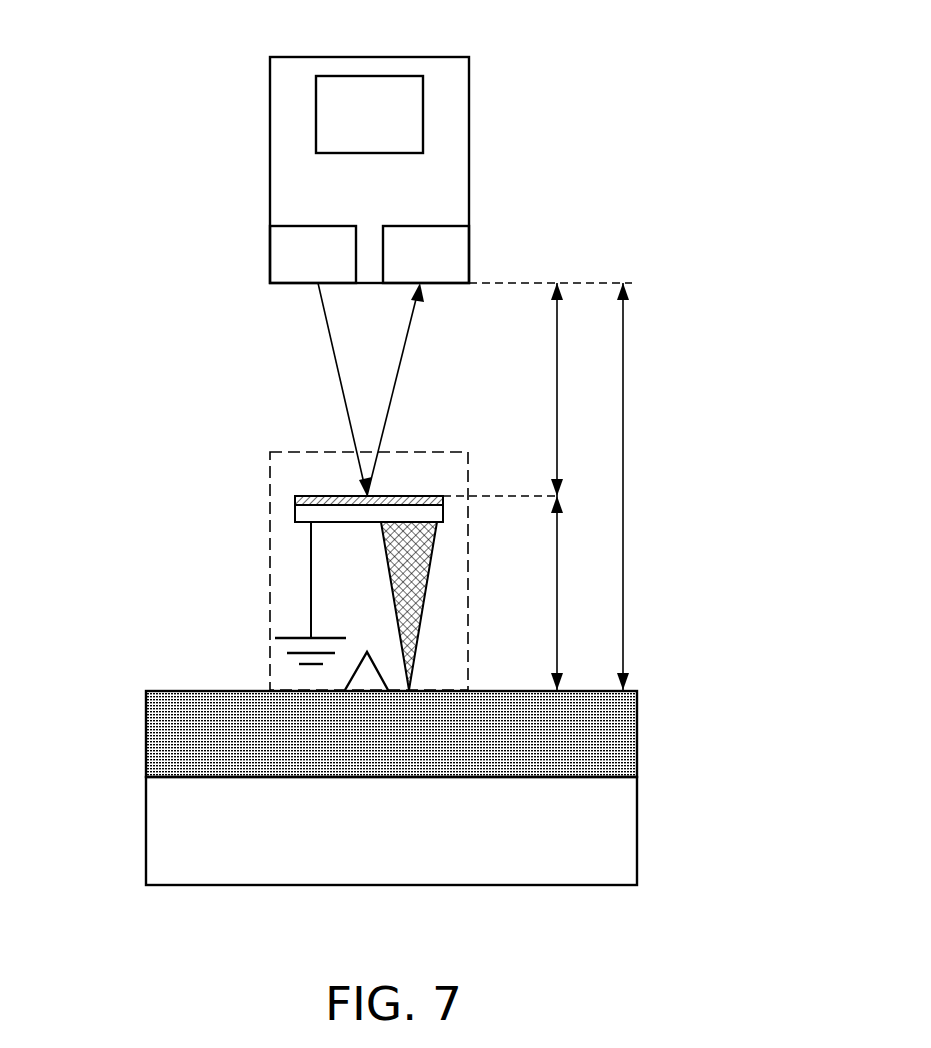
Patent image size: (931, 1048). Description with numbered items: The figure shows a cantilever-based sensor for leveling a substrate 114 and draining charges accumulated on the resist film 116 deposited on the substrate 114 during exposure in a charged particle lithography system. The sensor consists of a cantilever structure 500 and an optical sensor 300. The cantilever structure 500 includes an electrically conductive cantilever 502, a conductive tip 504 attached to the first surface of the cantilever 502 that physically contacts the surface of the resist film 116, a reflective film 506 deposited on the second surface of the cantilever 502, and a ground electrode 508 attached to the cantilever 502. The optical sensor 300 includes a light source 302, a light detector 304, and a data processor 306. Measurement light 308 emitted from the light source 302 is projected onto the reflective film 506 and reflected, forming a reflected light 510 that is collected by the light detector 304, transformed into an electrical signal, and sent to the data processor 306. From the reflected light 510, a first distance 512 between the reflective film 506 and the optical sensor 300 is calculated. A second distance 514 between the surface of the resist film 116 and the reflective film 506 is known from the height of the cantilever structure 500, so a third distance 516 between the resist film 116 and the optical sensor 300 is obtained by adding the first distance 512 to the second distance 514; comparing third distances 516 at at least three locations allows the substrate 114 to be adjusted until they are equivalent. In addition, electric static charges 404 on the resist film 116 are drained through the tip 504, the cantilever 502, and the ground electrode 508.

The optical sensor 300 is at (478, 72).
The light source 302 is at (270, 256).
The light detector 304 is at (469, 254).
The data processor 306 is at (423, 118).
The measurement light 308 is at (334, 352).
The reflected light 510 is at (403, 352).
The cantilever structure 500 is at (262, 444).
The cantilever 502 is at (295, 514).
The tip 504 is at (424, 600).
The reflective film 506 is at (295, 500).
The ground electrode 508 is at (311, 571).
The first distance 512 is at (581, 389).
The second distance 514 is at (581, 593).
The third distance 516 is at (648, 486).
The electric static charges 404 is at (343, 683).
The resist film 116 is at (637, 735).
The substrate 114 is at (637, 830).